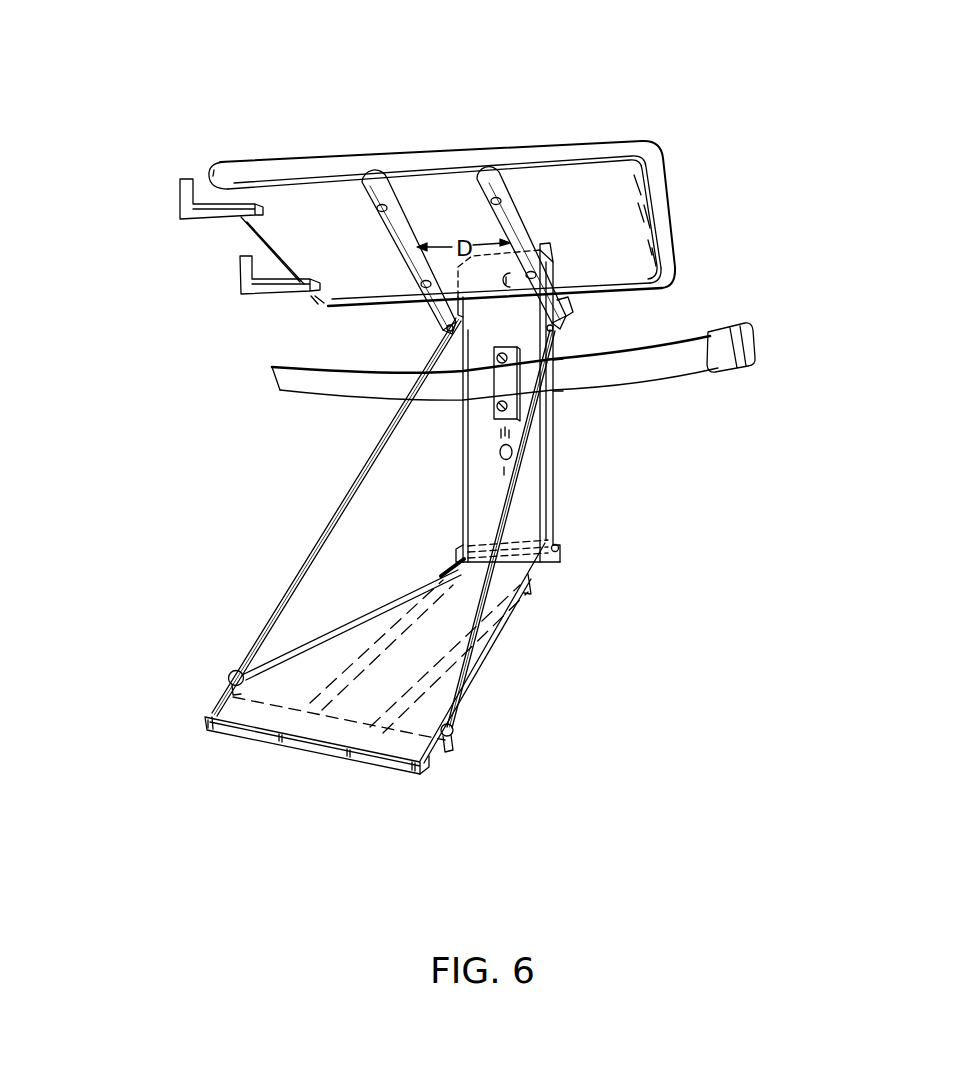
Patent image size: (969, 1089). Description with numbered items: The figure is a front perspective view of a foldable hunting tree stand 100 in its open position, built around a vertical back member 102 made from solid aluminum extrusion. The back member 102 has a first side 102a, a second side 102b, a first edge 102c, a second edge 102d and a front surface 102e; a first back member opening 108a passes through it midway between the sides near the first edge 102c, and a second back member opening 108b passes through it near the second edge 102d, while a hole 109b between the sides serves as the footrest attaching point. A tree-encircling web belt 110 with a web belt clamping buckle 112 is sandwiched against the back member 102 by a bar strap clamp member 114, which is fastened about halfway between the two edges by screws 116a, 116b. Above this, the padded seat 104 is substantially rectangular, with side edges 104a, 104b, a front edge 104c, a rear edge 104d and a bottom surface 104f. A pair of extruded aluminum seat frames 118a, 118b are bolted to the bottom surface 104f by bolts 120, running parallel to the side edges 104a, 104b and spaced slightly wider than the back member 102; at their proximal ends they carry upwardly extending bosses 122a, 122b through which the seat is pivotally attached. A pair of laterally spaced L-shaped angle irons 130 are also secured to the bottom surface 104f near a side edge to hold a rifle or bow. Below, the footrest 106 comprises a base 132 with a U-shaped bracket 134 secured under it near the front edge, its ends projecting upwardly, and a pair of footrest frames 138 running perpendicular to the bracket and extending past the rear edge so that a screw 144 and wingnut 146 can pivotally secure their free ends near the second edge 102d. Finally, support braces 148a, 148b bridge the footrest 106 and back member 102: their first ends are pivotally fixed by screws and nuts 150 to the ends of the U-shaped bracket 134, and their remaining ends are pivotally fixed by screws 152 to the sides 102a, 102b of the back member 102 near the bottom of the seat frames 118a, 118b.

The foldable hunting tree stand 100 is at (733, 113).
The vertical back member 102 is at (533, 460).
The first side 102a is at (465, 478).
The second side 102b is at (553, 432).
The first edge 102c is at (537, 262).
The second edge 102d is at (465, 565).
The front surface 102e is at (530, 518).
The seat 104 is at (654, 172).
The side edge 104a is at (240, 228).
The side edge 104b is at (662, 221).
The front edge 104c is at (377, 167).
The rear edge 104d is at (625, 287).
The bottom surface 104f is at (338, 202).
The footrest 106 is at (487, 633).
The first back member opening 108a is at (548, 250).
The second back member opening 108b is at (500, 452).
The hole 109b is at (484, 546).
The web belt 110 is at (650, 368).
The web belt clamping buckle 112 is at (752, 357).
The bar strap clamp member 114 is at (507, 382).
The screw 116a is at (563, 352).
The screw 116b is at (560, 407).
The seat frame 118a is at (345, 302).
The seat frame 118b is at (541, 250).
The bolts 120 is at (382, 208).
The boss 122a is at (450, 325).
The boss 122b is at (575, 316).
The L-shaped angle irons 130 is at (180, 178).
The base 132 is at (235, 713).
The U-shaped bracket 134 is at (423, 758).
The footrest frames 138 is at (490, 603).
The screw 144 is at (563, 532).
The wingnut 146 is at (560, 548).
The support brace 148a is at (350, 497).
The support brace 148b is at (478, 624).
The screws and nuts 150 is at (233, 671).
The screws 152 is at (551, 329).